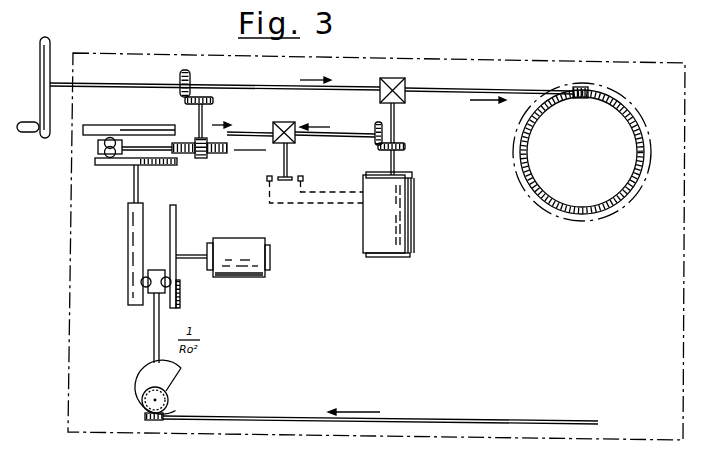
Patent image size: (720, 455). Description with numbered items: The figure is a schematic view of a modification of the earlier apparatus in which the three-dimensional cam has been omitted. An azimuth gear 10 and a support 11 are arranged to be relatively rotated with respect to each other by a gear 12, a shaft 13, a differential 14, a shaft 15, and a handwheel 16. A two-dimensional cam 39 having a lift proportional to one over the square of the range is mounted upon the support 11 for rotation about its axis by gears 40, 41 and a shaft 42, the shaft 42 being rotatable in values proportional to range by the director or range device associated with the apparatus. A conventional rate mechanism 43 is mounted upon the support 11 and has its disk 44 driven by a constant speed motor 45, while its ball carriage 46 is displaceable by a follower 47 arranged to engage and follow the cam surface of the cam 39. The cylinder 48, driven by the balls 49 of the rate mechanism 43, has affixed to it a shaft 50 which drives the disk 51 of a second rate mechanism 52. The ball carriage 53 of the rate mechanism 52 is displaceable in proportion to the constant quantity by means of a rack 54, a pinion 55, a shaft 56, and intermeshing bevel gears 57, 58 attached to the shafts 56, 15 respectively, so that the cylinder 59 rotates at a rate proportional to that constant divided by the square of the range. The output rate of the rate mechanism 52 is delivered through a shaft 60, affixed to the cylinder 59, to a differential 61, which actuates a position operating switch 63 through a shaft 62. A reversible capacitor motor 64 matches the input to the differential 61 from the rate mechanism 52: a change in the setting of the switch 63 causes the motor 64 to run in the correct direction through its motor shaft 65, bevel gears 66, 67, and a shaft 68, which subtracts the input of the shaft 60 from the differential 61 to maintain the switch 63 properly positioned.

The azimuth gear 10 is at (644, 157).
The support 11 is at (613, 63).
The gear 12 is at (586, 89).
The shaft 13 is at (489, 86).
The differential 14 is at (407, 84).
The shaft 15 is at (272, 86).
The handwheel 16 is at (52, 48).
The two-dimensional cam 39 is at (183, 372).
The gear 40 is at (169, 401).
The gear 41 is at (160, 422).
The shaft 42 is at (280, 418).
The rate mechanism 43 is at (177, 270).
The disk 44 is at (177, 230).
The constant speed motor 45 is at (258, 259).
The ball carriage 46 is at (150, 293).
The follower 47 is at (153, 338).
The cylinder 48 is at (132, 255).
The balls 49 is at (180, 301).
The shaft 50 is at (140, 197).
The disk 51 is at (115, 168).
The second rate mechanism 52 is at (97, 149).
The ball carriage 53 is at (98, 143).
The rack 54 is at (216, 155).
The pinion 55 is at (200, 159).
The shaft 56 is at (198, 117).
The bevel gear 57 is at (215, 103).
The bevel gear 58 is at (193, 79).
The cylinder 59 is at (136, 128).
The shaft 60 is at (238, 132).
The differential 61 is at (291, 123).
The shaft 62 is at (291, 163).
The position operating switch 63 is at (300, 178).
The reversible capacitor motor 64 is at (410, 233).
The motor shaft 65 is at (398, 170).
The bevel gear 66 is at (401, 149).
The bevel gear 67 is at (377, 140).
The shaft 68 is at (330, 132).